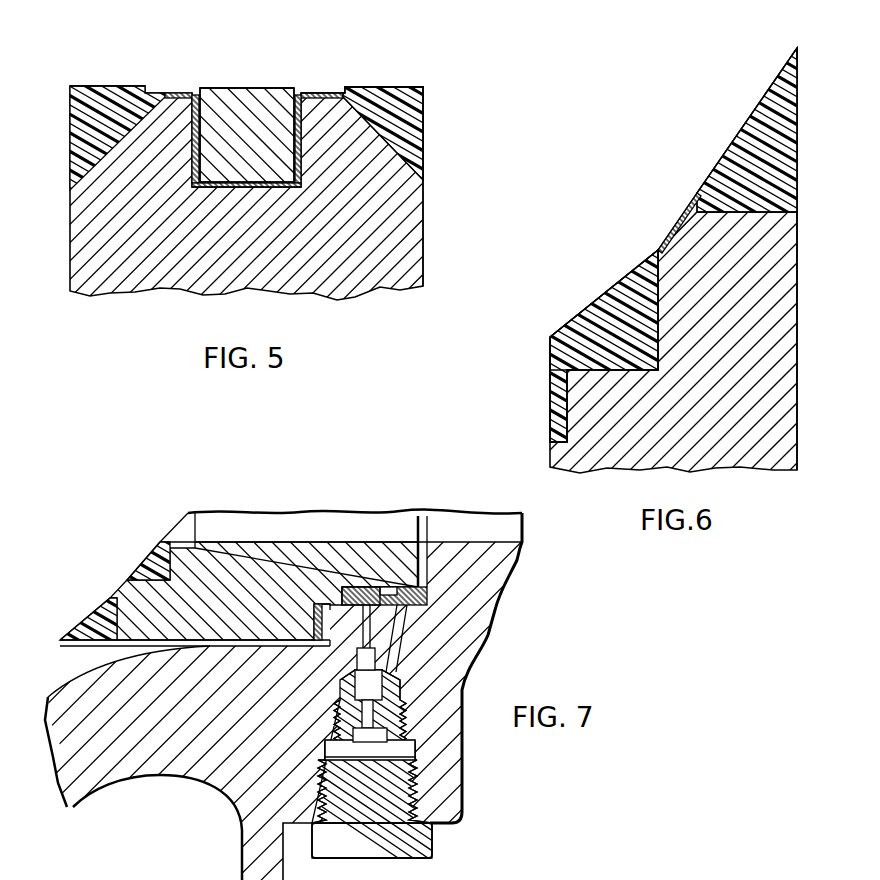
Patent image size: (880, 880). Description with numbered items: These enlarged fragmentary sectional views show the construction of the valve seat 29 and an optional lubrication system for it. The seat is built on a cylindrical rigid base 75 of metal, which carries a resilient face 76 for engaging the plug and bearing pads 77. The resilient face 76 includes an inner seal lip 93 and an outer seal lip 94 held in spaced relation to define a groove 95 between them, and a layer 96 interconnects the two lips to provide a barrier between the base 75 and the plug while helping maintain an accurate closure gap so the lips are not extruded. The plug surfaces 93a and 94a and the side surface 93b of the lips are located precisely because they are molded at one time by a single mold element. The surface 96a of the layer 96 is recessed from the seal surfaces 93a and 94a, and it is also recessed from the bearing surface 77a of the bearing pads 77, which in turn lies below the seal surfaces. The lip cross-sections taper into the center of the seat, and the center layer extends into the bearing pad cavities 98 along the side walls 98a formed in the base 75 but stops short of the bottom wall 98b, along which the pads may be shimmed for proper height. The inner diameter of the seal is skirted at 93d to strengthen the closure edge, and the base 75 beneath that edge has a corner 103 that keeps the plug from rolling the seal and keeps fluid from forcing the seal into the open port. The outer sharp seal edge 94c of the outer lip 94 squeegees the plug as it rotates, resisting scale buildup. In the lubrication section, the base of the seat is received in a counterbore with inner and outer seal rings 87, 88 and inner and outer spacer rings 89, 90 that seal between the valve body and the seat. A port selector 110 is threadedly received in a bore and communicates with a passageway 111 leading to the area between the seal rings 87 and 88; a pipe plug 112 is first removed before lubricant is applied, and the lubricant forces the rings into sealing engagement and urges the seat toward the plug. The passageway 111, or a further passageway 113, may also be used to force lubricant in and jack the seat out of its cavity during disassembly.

In FIG. 5, the seat 29 is at (397, 241).
In FIG. 6, the seat 29 is at (799, 267).
In FIG. 5, the base 75 is at (368, 268).
In FIG. 6, the base 75 is at (742, 402).
In FIG. 5, the resilient face 76 is at (375, 86).
In FIG. 6, the resilient face 76 is at (620, 267).
In FIG. 5, the bearing pads 77 is at (250, 114).
In FIG. 5, the bearing surface 77a is at (245, 85).
In FIG. 7, the inner seal ring 87 is at (347, 583).
In FIG. 7, the outer seal ring 88 is at (398, 586).
In FIG. 7, the inner spacer ring 89 is at (372, 585).
In FIG. 7, the outer spacer ring 90 is at (430, 578).
In FIG. 5, the inner seal lip 93 is at (424, 98).
In FIG. 6, the inner seal lip 93 is at (612, 280).
In FIG. 5, the plug surface of inner seal lip 93a is at (407, 87).
In FIG. 6, the plug surface of inner seal lip 93a is at (603, 302).
In FIG. 5, the side surface of inner seal lip 93b is at (424, 143).
In FIG. 6, the side surface of inner seal lip 93b is at (548, 362).
In FIG. 6, the skirt 93d is at (549, 420).
In FIG. 5, the outer seal lip 94 is at (98, 100).
In FIG. 6, the outer seal lip 94 is at (743, 152).
In FIG. 5, the plug surface of outer seal lip 94a is at (122, 84).
In FIG. 6, the plug surface of outer seal lip 94a is at (769, 84).
In FIG. 6, the outer sharp seal edge 94c is at (798, 47).
In FIG. 6, the groove 95 is at (668, 230).
In FIG. 5, the layer 96 is at (307, 96).
In FIG. 6, the layer 96 is at (683, 210).
In FIG. 5, the surface of layer 96a is at (327, 96).
In FIG. 5, the bearing pad cavities 98 is at (223, 178).
In FIG. 5, the side walls 98a is at (191, 165).
In FIG. 5, the bottom wall 98b is at (268, 168).
In FIG. 6, the corner 103 is at (580, 358).
In FIG. 7, the port selector 110 is at (402, 710).
In FIG. 7, the passageway 111 is at (366, 628).
In FIG. 7, the pipe plug 112 is at (410, 848).
In FIG. 7, the passageway 113 is at (400, 645).